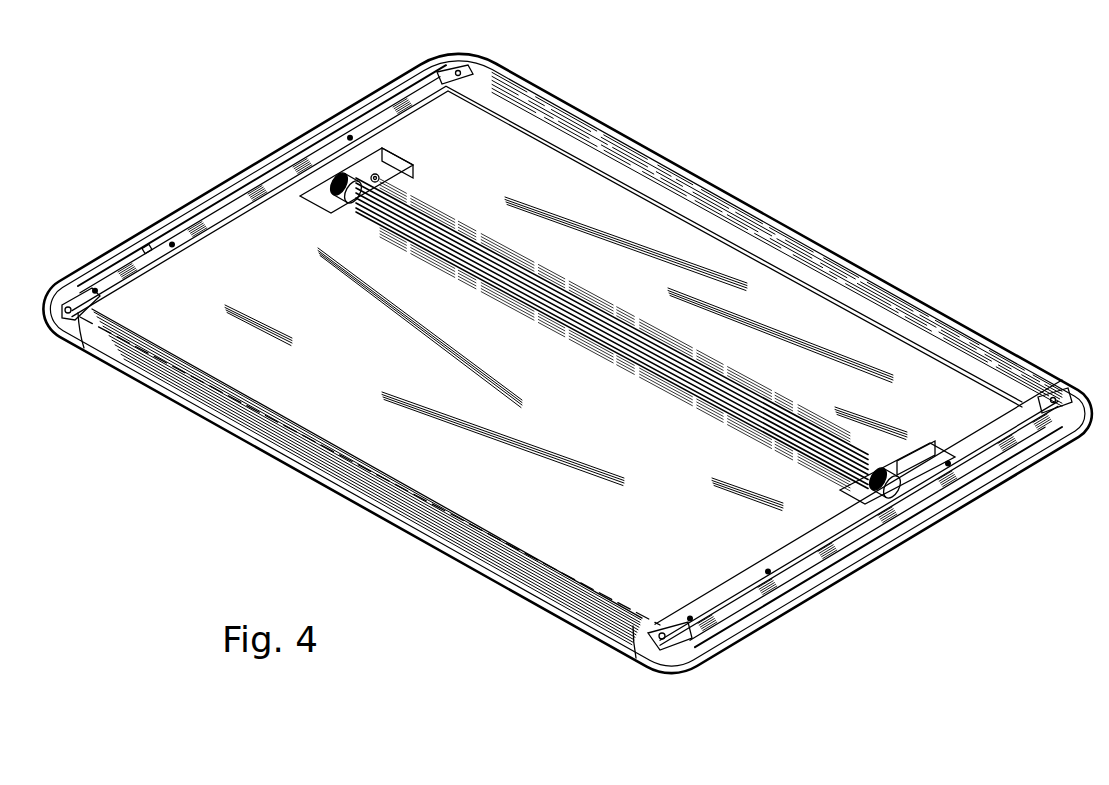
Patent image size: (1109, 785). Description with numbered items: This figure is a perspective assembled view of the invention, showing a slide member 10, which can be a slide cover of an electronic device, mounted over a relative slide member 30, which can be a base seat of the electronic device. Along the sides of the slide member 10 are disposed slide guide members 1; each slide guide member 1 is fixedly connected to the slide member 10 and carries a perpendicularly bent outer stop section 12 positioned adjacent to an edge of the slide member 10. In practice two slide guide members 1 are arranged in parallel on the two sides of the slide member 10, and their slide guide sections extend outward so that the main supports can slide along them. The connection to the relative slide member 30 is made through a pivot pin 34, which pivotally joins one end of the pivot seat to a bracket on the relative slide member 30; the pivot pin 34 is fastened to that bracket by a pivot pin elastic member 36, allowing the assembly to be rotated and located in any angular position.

The slide guide member 1 is at (298, 138).
The slide member 10 is at (552, 93).
The outer stop section 12 is at (1008, 450).
The relative slide member 30 is at (185, 388).
The pivot pin 34 is at (362, 174).
The pivot pin elastic member 36 is at (306, 166).